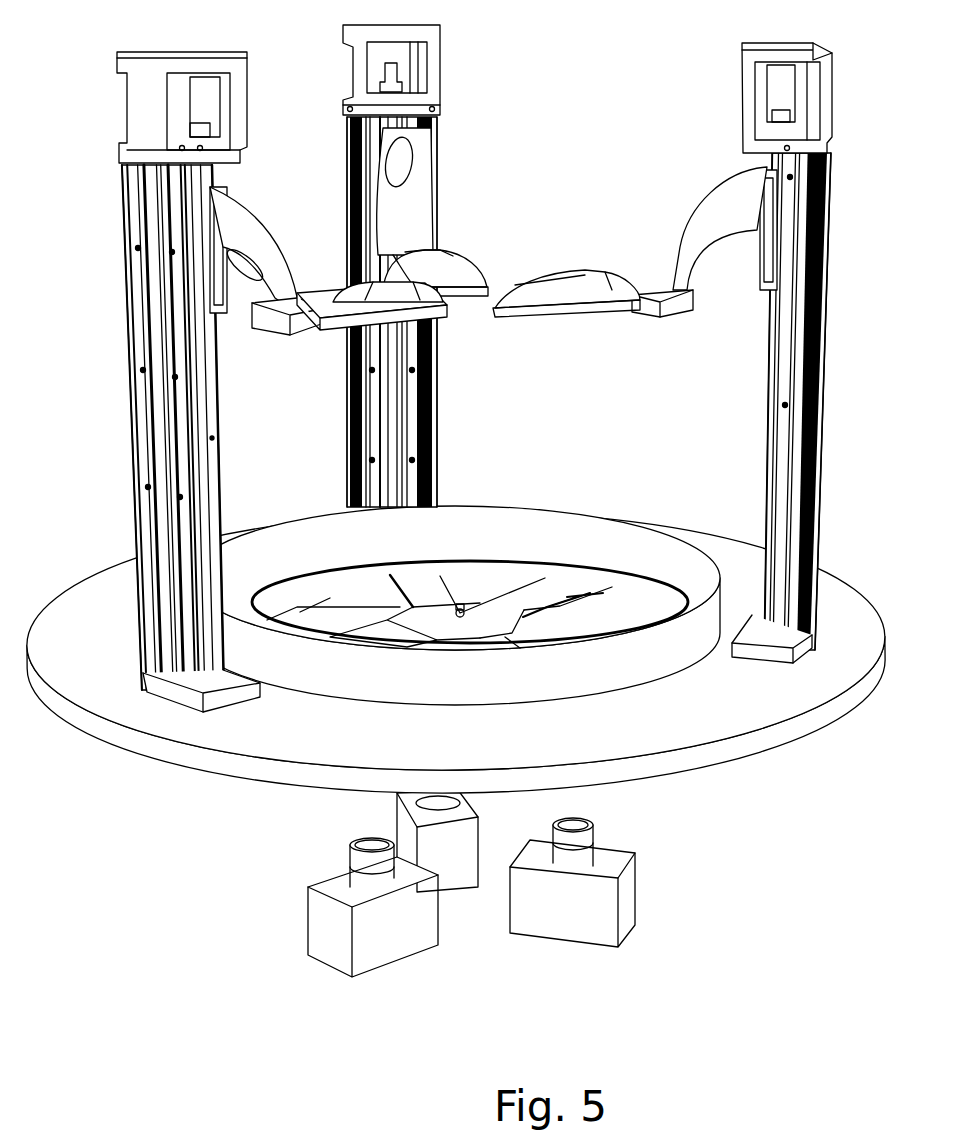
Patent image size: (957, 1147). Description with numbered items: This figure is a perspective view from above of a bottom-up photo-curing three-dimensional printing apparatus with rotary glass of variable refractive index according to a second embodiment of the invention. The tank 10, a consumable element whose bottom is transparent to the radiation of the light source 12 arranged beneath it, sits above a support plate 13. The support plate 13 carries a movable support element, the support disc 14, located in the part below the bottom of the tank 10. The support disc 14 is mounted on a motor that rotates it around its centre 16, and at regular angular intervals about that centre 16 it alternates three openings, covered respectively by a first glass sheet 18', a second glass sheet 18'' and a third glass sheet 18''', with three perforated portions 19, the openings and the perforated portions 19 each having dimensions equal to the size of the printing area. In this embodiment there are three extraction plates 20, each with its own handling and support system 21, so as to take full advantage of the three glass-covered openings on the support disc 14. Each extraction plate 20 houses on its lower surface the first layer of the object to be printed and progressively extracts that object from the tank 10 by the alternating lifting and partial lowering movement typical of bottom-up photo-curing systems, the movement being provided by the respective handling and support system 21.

The tank 10 is at (584, 540).
The light source 12 is at (400, 818).
The support plate 13 is at (783, 697).
The support disc 14 is at (362, 590).
The centre 16 is at (458, 615).
The first glass sheet 18' is at (637, 718).
The second glass sheet 18'' is at (346, 713).
The third glass sheet 18''' is at (458, 533).
The perforated portions 19 is at (318, 610).
The extraction plate 20 is at (346, 326).
The handling and support system 21 is at (110, 212).